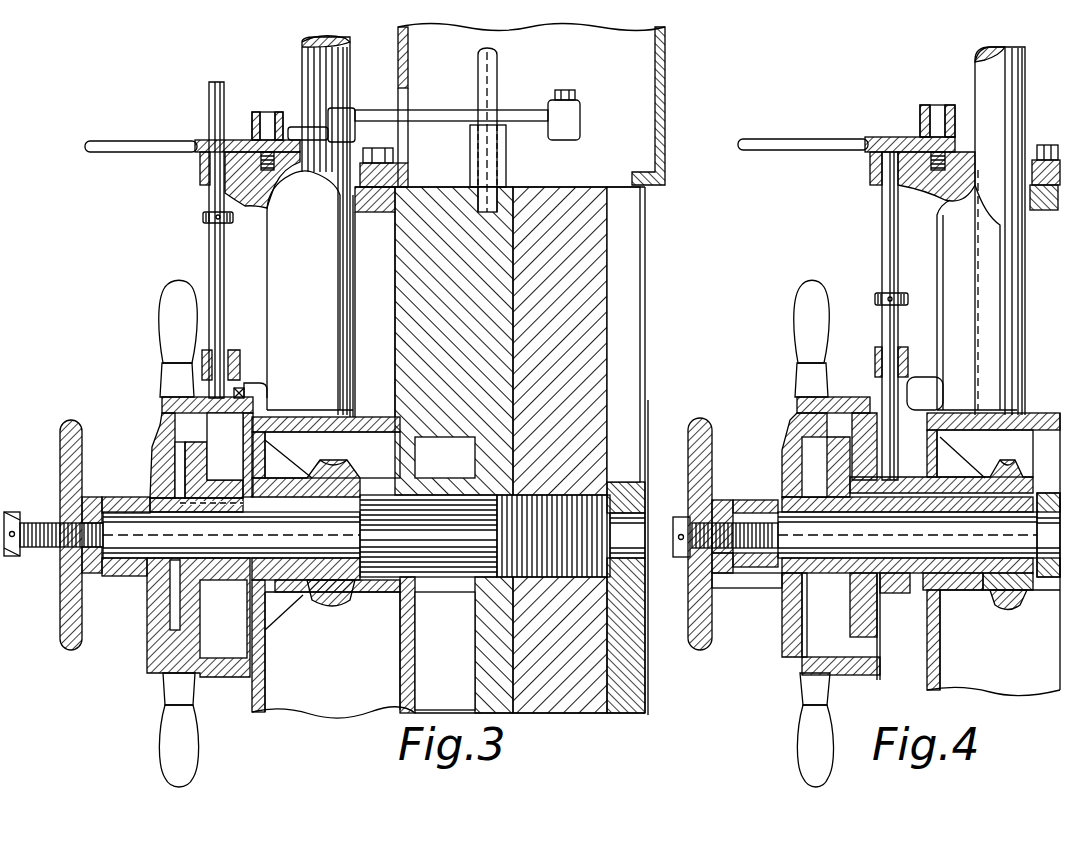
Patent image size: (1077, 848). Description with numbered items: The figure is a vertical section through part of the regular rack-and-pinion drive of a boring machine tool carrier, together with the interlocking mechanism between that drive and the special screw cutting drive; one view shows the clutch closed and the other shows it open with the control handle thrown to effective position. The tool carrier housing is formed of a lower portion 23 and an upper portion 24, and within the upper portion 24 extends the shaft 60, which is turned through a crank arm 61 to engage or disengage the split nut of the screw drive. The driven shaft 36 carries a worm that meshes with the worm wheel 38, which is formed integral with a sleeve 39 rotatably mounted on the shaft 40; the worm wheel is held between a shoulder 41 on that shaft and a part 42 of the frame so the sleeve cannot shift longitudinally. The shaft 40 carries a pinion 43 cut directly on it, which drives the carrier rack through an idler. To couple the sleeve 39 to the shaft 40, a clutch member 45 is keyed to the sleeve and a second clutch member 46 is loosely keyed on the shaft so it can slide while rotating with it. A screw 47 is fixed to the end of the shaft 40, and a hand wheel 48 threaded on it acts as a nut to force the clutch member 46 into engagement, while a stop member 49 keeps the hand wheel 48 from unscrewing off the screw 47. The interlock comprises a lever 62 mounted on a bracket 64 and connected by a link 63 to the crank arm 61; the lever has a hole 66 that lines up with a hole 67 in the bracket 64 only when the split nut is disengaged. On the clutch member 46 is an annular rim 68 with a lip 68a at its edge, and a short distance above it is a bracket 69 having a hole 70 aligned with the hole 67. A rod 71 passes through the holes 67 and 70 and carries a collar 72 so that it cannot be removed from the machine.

In FIG. 3, the lower portion of tool carrier housing 23 is at (405, 352).
In FIG. 3, the upper portion of tool carrier housing 24 is at (668, 74).
In FIG. 3, the driven shaft 36 is at (312, 48).
In FIG. 4, the driven shaft 36 is at (1028, 328).
In FIG. 3, the worm wheel 38 is at (352, 598).
In FIG. 4, the worm wheel 38 is at (1014, 606).
In FIG. 3, the sleeve 39 is at (297, 508).
In FIG. 4, the sleeve 39 is at (960, 506).
In FIG. 3, the shaft 40 is at (374, 535).
In FIG. 4, the shaft 40 is at (919, 535).
In FIG. 3, the shoulder 41 is at (366, 516).
In FIG. 3, the part of the frame 42 is at (300, 600).
In FIG. 3, the pinion 43 is at (515, 565).
In FIG. 3, the clutch member 45 is at (214, 455).
In FIG. 4, the clutch member 45 is at (866, 430).
In FIG. 3, the second clutch member 46 is at (152, 440).
In FIG. 3, the screw 47 is at (40, 552).
In FIG. 4, the screw 47 is at (746, 520).
In FIG. 3, the hand wheel 48 is at (70, 640).
In FIG. 4, the hand wheel 48 is at (706, 430).
In FIG. 3, the stop member 49 is at (10, 512).
In FIG. 4, the stop member 49 is at (673, 518).
In FIG. 3, the shaft 60 is at (500, 88).
In FIG. 3, the crank arm 61 is at (534, 134).
In FIG. 3, the lever 62 is at (120, 146).
In FIG. 4, the lever 62 is at (808, 144).
In FIG. 3, the link 63 is at (436, 110).
In FIG. 3, the bracket 64 is at (258, 188).
In FIG. 3, the hole 66 is at (236, 140).
In FIG. 3, the hole 67 is at (200, 174).
In FIG. 4, the hole 67 is at (870, 168).
In FIG. 3, the annular flange or rim 68 is at (218, 413).
In FIG. 4, the annular flange or rim 68 is at (842, 398).
In FIG. 3, the lip 68a is at (246, 392).
In FIG. 4, the lip 68a is at (882, 380).
In FIG. 3, the bracket 69 is at (238, 350).
In FIG. 4, the bracket 69 is at (908, 350).
In FIG. 3, the hole 70 is at (205, 350).
In FIG. 4, the hole 70 is at (875, 355).
In FIG. 3, the rod 71 is at (210, 243).
In FIG. 4, the rod 71 is at (880, 209).
In FIG. 3, the collar 72 is at (203, 216).
In FIG. 4, the collar 72 is at (876, 296).